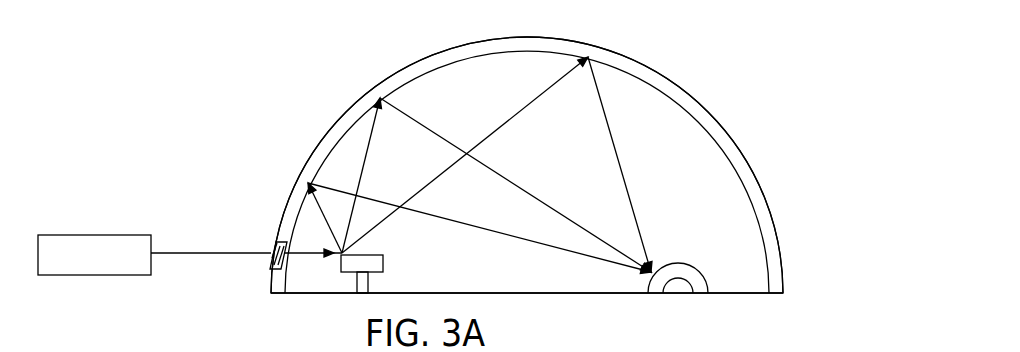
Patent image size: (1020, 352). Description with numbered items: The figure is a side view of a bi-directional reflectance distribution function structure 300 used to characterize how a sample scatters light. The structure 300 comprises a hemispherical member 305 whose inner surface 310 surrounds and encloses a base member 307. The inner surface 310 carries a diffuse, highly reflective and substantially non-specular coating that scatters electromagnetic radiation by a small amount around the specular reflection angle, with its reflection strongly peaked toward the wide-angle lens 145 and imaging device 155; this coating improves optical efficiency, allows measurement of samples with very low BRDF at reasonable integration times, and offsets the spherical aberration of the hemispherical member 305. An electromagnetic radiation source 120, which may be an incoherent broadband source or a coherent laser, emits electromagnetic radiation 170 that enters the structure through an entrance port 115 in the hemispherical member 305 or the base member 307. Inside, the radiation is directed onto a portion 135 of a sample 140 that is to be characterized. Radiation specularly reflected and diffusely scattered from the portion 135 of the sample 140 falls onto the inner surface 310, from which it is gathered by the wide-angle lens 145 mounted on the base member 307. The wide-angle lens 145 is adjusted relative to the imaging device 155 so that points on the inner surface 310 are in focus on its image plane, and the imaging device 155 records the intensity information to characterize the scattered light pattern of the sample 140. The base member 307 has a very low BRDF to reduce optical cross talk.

The bi-directional reflectance distribution function structure 300 is at (222, 148).
The hemispherical member 305 is at (687, 94).
The inner surface 310 is at (687, 113).
The base member 307 is at (752, 295).
The electromagnetic radiation source 120 is at (77, 266).
The electromagnetic radiation 170 is at (187, 253).
The entrance port 115 is at (262, 266).
The portion of sample 135 is at (330, 266).
The sample 140 is at (384, 264).
The wide-angle lens 145 is at (683, 263).
The imaging device 155 is at (692, 281).